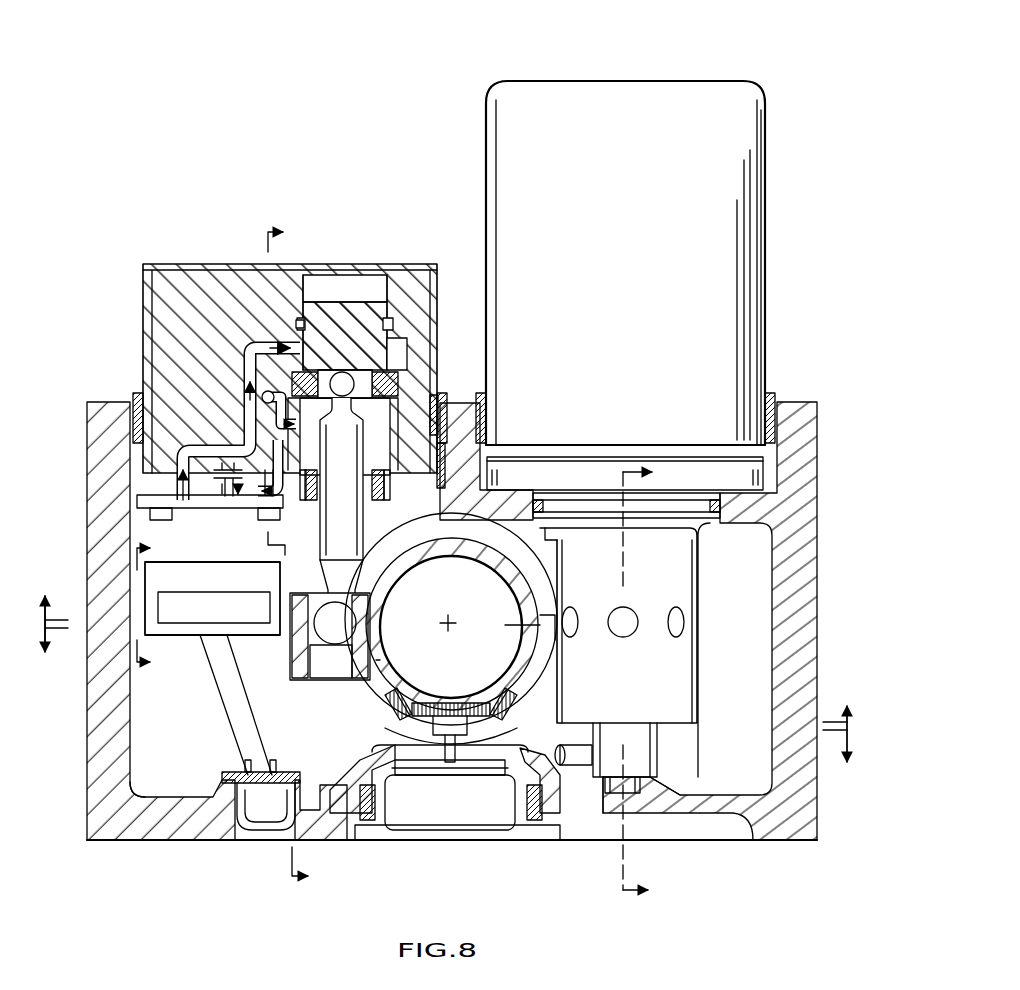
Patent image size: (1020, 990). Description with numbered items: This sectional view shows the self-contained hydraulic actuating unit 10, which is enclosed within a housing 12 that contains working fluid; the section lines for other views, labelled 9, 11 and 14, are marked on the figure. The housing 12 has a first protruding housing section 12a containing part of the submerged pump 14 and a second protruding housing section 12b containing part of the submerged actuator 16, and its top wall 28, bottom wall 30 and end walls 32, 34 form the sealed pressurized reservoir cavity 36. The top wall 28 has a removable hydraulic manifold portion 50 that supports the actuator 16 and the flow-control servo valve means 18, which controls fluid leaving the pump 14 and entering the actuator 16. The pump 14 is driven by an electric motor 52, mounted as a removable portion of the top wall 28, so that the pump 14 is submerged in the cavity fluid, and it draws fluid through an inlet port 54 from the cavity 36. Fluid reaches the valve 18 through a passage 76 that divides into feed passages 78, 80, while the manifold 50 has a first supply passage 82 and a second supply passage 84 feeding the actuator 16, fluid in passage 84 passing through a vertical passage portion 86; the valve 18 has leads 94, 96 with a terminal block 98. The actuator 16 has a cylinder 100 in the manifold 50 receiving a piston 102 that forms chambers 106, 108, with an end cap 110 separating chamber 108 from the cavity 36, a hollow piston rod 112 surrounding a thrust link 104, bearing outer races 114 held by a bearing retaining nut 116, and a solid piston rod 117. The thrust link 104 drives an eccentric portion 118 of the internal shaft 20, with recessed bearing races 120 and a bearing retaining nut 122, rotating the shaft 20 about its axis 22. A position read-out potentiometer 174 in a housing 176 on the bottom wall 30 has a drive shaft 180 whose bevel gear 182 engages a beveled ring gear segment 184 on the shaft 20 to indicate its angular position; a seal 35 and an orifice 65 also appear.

The section line 9- 9 is at (444, 693).
The hydraulic actuating unit 10 is at (658, 76).
The section line 11- 11 is at (305, 555).
The housing 12 is at (782, 408).
The first protruding housing section 12a is at (764, 131).
The second protruding housing section 12b is at (143, 290).
The pump 14 is at (700, 578).
The actuator 16 is at (392, 302).
The flow-control servo valve means 18 is at (215, 583).
The internal shaft 20 is at (528, 580).
The axis 22 is at (458, 620).
The top wall 28 is at (480, 420).
The bottom wall 30 is at (572, 806).
The end wall 32 is at (797, 573).
The end wall 34 is at (108, 526).
The seal 35 is at (135, 397).
The reservoir cavity 36 is at (437, 660).
The hydraulic manifold portion 50 is at (214, 397).
The drive means 52 is at (625, 263).
The inlet port 54 is at (563, 748).
The orifice 65 is at (264, 402).
The passage 76 is at (217, 497).
The feed passage 78 is at (228, 500).
The feed passage 80 is at (207, 502).
The first supply passage 82 is at (302, 478).
The second supply passage 84 is at (207, 497).
The vertical passage portion 86 is at (247, 346).
The lead 94 is at (232, 737).
The lead 96 is at (270, 726).
The terminal block 98 is at (280, 770).
The cylinder 100 is at (345, 322).
The piston 102 is at (397, 350).
The thrust link 104 is at (341, 479).
The chamber 106 is at (395, 323).
The chamber 108 is at (434, 410).
The end cap 110 is at (434, 508).
The hollow piston rod 112 is at (392, 556).
The bearing outer races 114 is at (382, 378).
The bearing retaining nut 116 is at (392, 398).
The solid piston rod 117 is at (298, 322).
The eccentric portion 118 is at (292, 658).
The recessed bearing races 120 is at (382, 606).
The bearing retaining nut 122 is at (382, 661).
The position read-out potentiometer 174 is at (468, 832).
The housing 176 is at (450, 795).
The drive shaft 180 is at (400, 740).
The bevel gear 182 is at (492, 738).
The beveled ring gear segment 184 is at (510, 722).